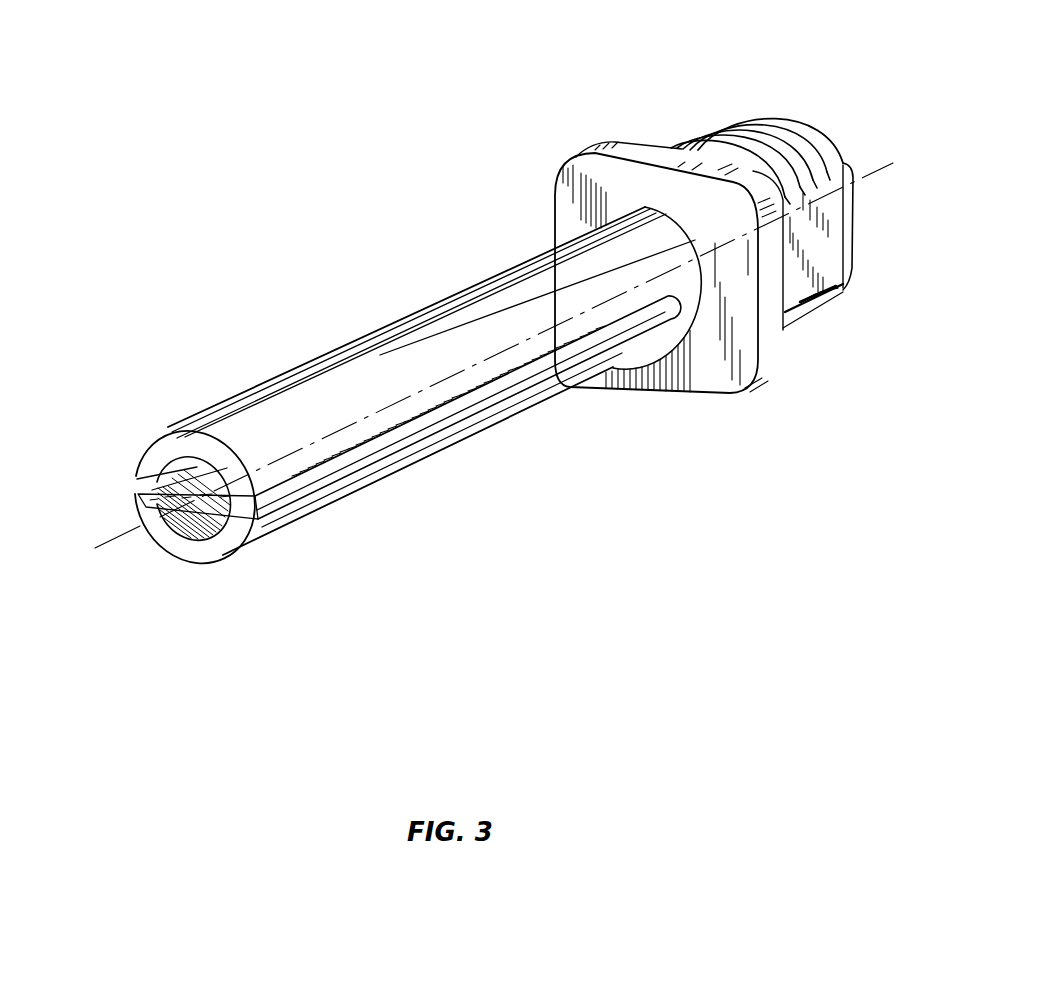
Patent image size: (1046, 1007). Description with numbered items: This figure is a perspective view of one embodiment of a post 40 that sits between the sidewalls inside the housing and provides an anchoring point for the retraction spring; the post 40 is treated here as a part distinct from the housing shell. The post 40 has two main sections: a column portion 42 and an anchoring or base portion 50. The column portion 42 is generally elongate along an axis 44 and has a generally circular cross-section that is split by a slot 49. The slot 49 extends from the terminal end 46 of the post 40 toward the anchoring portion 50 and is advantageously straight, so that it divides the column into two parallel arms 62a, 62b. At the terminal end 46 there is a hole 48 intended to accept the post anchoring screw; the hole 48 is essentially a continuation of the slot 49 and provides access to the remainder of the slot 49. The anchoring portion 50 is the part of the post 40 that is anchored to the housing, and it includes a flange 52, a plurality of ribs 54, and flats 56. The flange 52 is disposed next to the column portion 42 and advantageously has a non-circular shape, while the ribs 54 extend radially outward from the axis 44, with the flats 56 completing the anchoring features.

The post 40 is at (359, 134).
The column portion 42 is at (297, 397).
The axis 44 is at (435, 383).
The terminal end 46 is at (115, 512).
The hole 48 is at (167, 528).
The slot 49 is at (191, 480).
The anchoring portion 50 is at (840, 127).
The flange 52 is at (643, 150).
The ribs 54 is at (752, 140).
The flats 56 is at (817, 263).
The arm 62a is at (525, 297).
The arm 62b is at (557, 380).